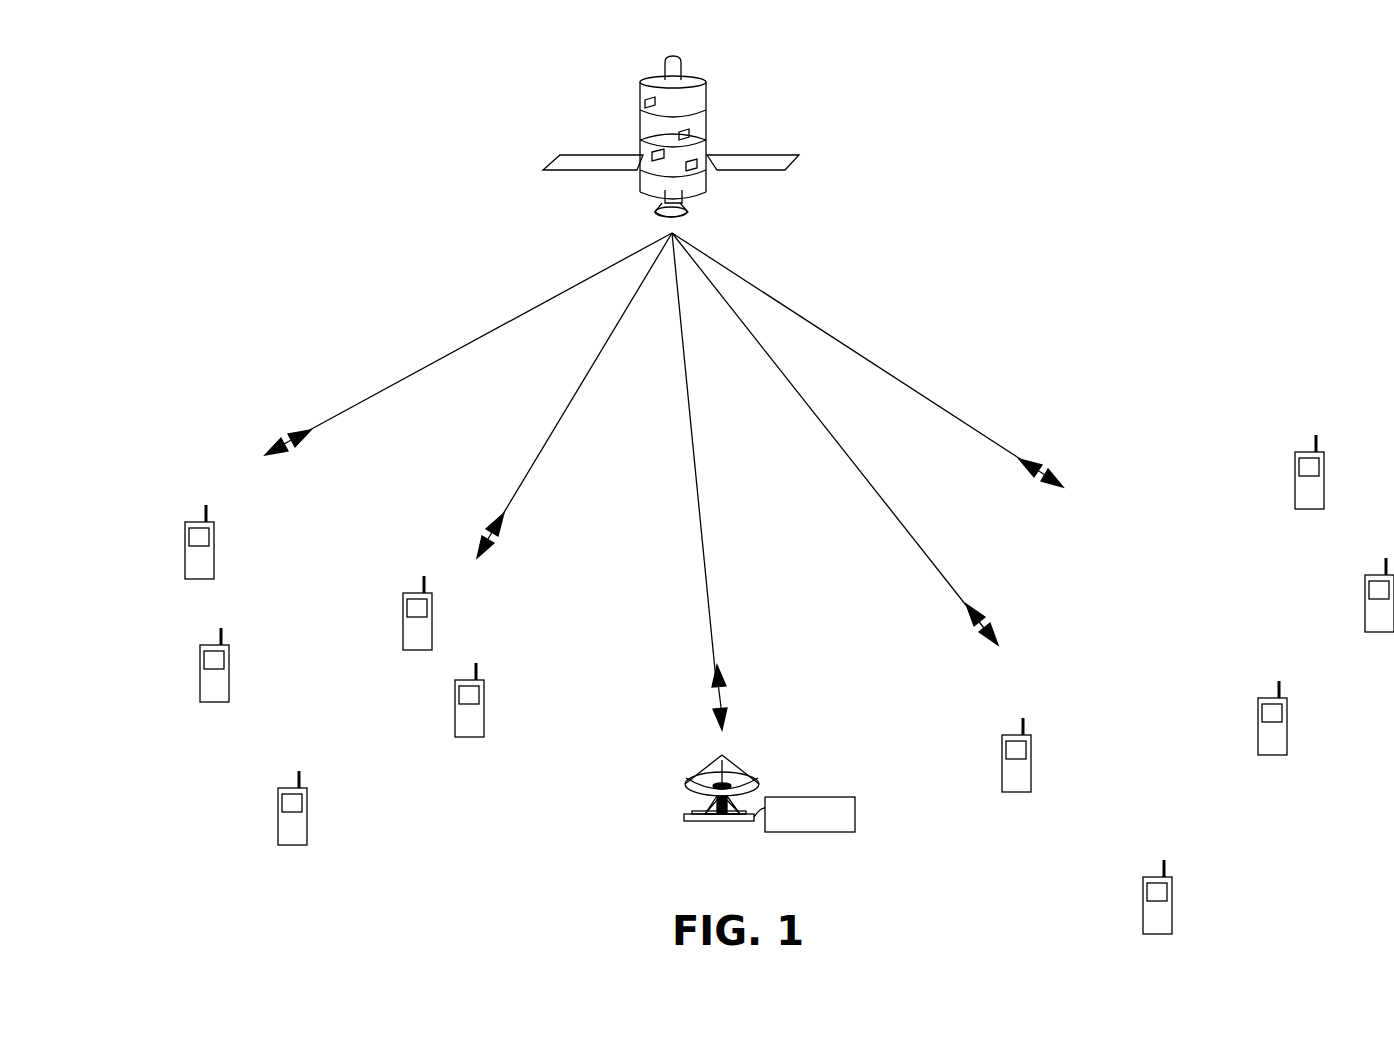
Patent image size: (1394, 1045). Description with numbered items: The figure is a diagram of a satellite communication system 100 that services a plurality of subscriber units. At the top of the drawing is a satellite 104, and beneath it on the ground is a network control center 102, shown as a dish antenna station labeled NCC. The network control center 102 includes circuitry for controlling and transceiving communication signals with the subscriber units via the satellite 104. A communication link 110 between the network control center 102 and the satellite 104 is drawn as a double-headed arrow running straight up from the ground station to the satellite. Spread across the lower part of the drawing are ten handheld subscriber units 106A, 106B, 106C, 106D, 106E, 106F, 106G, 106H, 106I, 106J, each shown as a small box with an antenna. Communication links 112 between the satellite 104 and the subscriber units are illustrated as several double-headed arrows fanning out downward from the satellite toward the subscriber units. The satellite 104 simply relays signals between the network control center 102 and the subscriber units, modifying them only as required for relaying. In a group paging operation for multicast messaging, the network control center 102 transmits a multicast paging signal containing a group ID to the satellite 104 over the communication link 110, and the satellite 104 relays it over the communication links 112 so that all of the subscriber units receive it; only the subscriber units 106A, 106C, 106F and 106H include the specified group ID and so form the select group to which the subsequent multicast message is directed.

The satellite communication system 100 is at (524, 838).
The network control center 102 is at (690, 817).
The satellite 104 is at (708, 97).
The subscriber unit 106A is at (185, 560).
The subscriber unit 106B is at (200, 682).
The subscriber unit 106C is at (403, 631).
The subscriber unit 106D is at (278, 827).
The subscriber unit 106E is at (455, 719).
The subscriber unit 106F is at (1365, 612).
The subscriber unit 106G is at (1295, 489).
The subscriber unit 106H is at (1002, 774).
The subscriber unit 106I is at (1143, 917).
The subscriber unit 106J is at (1258, 737).
The communication link 110 is at (719, 702).
The communication links 112 is at (362, 402).